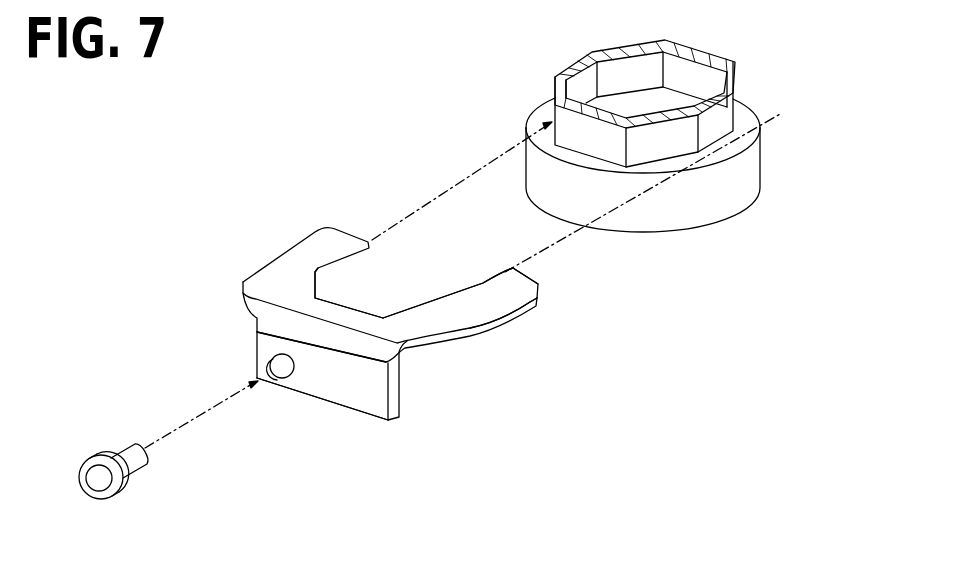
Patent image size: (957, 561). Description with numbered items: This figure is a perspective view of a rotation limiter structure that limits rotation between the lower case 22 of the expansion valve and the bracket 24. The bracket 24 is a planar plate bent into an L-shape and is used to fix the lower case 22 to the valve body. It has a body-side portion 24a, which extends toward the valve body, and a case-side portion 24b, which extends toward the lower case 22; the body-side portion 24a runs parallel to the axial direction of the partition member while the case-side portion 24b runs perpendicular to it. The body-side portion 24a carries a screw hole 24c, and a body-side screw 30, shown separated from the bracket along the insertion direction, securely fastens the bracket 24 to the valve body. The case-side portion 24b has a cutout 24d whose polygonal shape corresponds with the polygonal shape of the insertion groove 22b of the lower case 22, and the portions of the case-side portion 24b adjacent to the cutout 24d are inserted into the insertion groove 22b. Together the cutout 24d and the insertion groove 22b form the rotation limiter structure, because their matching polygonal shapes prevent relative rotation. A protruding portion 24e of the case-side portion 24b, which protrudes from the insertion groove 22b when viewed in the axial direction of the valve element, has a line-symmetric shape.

The lower case 22 is at (649, 136).
The insertion groove 22b is at (718, 119).
The bracket 24 is at (372, 361).
The body-side portion 24a is at (343, 385).
The case-side portion 24b is at (483, 312).
The screw hole 24c is at (283, 380).
The cutout 24d is at (482, 287).
The protruding portion 24e is at (307, 305).
The body-side screw 30 is at (88, 455).